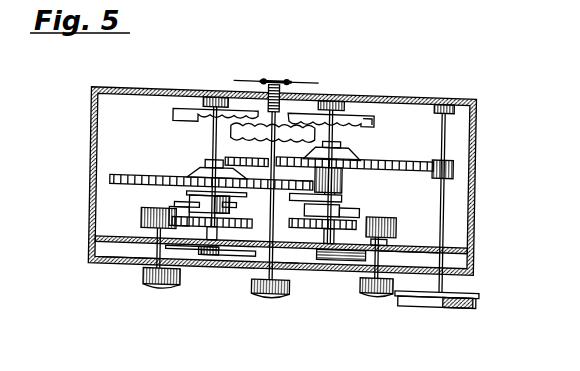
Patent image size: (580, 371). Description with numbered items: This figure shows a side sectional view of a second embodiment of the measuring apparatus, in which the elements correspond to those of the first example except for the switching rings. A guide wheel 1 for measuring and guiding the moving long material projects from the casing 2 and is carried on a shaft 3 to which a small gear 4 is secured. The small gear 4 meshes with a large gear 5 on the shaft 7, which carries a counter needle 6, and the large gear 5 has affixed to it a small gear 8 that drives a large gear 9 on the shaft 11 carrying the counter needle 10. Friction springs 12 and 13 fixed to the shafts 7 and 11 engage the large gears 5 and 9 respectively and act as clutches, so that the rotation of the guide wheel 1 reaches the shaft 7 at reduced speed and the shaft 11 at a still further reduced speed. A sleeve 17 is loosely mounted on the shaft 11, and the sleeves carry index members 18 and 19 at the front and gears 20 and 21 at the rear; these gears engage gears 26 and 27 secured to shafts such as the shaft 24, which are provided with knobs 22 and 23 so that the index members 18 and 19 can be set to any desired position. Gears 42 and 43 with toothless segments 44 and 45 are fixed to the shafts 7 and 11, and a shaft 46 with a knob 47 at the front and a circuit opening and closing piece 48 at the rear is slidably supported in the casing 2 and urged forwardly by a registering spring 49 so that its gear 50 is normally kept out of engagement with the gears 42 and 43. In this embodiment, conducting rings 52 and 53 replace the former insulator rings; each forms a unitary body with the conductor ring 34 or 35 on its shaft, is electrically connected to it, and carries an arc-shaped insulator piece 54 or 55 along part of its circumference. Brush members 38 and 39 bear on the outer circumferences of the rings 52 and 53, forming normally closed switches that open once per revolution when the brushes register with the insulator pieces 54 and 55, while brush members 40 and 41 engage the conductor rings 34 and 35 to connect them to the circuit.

The guide wheel 1 is at (440, 300).
The casing 2 is at (475, 202).
The shaft 3 is at (440, 137).
The gear 4 is at (453, 168).
The gear 5 is at (416, 161).
The counter needle 6 is at (346, 268).
The shaft 7 is at (337, 138).
The gear 8 is at (343, 170).
The gear 9 is at (124, 180).
The counter needle 10 is at (214, 274).
The shaft 11 is at (212, 128).
The friction spring 12 is at (357, 151).
The friction spring 13 is at (190, 180).
The sleeve 17 is at (236, 267).
The index member 18 is at (354, 260).
The index member 19 is at (134, 267).
The gear 20 is at (288, 264).
The gear 21 is at (146, 248).
The knob 22 is at (382, 294).
The knob 23 is at (156, 291).
The shaft 24 is at (386, 253).
The gear 26 is at (397, 222).
The gear 27 is at (142, 226).
The conductor ring 34 is at (341, 202).
The conductor ring 35 is at (200, 196).
The brush member 38 is at (358, 210).
The brush member 39 is at (172, 213).
The brush member 40 is at (307, 187).
The brush member 41 is at (246, 194).
The gear 42 is at (305, 111).
The gear 43 is at (236, 112).
The toothless segment 44 is at (357, 113).
The toothless segment 45 is at (184, 111).
The shaft 46 is at (268, 280).
The knob 47 is at (264, 300).
The circuit opening and closing piece 48 is at (271, 79).
The registering spring 49 is at (278, 117).
The gear 50 is at (280, 140).
The ring 52 is at (306, 211).
The ring 53 is at (233, 207).
The insulator piece 54 is at (352, 211).
The insulator piece 55 is at (210, 194).